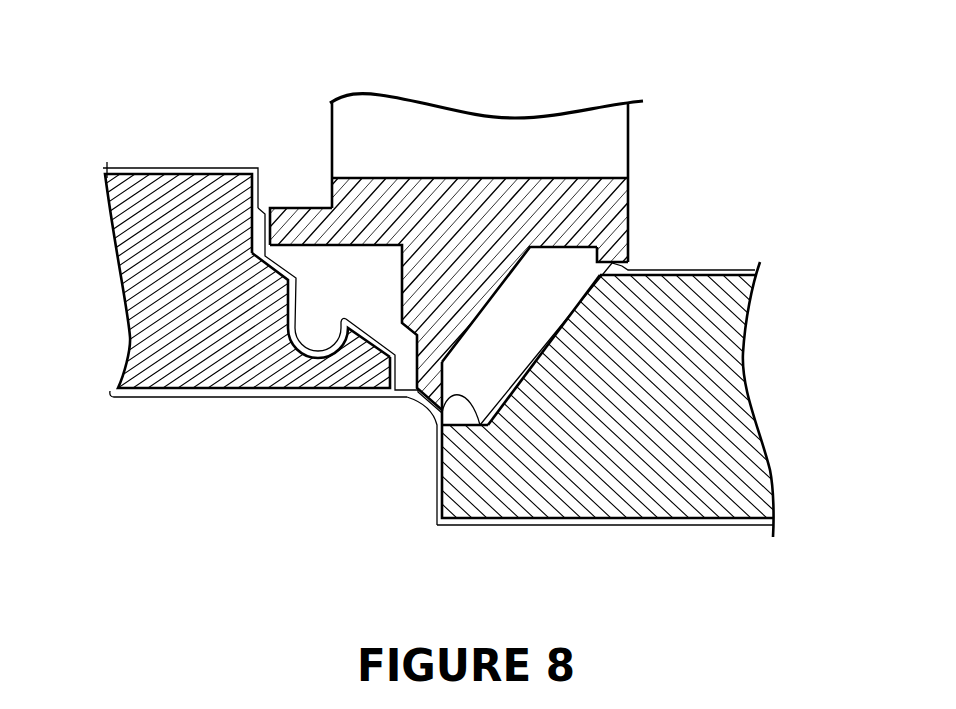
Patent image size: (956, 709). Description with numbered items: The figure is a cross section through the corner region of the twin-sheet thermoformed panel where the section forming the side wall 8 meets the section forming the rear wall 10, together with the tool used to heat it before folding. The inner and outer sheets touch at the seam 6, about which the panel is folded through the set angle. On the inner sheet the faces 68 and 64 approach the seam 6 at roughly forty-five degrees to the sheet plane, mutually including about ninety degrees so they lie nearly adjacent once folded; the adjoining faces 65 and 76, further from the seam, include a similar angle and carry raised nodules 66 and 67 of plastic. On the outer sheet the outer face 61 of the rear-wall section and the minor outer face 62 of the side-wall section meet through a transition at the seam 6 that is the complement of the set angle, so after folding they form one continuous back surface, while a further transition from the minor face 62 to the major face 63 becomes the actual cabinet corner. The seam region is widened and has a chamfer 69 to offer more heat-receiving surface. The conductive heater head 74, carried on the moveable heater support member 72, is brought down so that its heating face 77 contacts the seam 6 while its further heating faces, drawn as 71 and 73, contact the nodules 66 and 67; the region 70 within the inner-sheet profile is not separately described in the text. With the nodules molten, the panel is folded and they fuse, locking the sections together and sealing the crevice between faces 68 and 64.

The seam 6 is at (408, 396).
The side wall 8 is at (690, 470).
The rear wall 10 is at (153, 340).
The outer face 61 is at (196, 393).
The minor outer face 62 is at (438, 503).
The major face 63 is at (640, 523).
The face 64 is at (550, 342).
The face 65 is at (263, 228).
The nodule 66 is at (265, 220).
The nodule 67 is at (620, 257).
The face 68 is at (278, 275).
The chamfer 69 is at (468, 392).
The U-shaped groove 70 is at (333, 348).
The shoulder 71 is at (268, 217).
The heater support member 72 is at (618, 157).
The heating face 73 is at (620, 265).
The heater head 74 is at (463, 198).
The face 76 is at (737, 270).
The heating face 77 is at (428, 402).